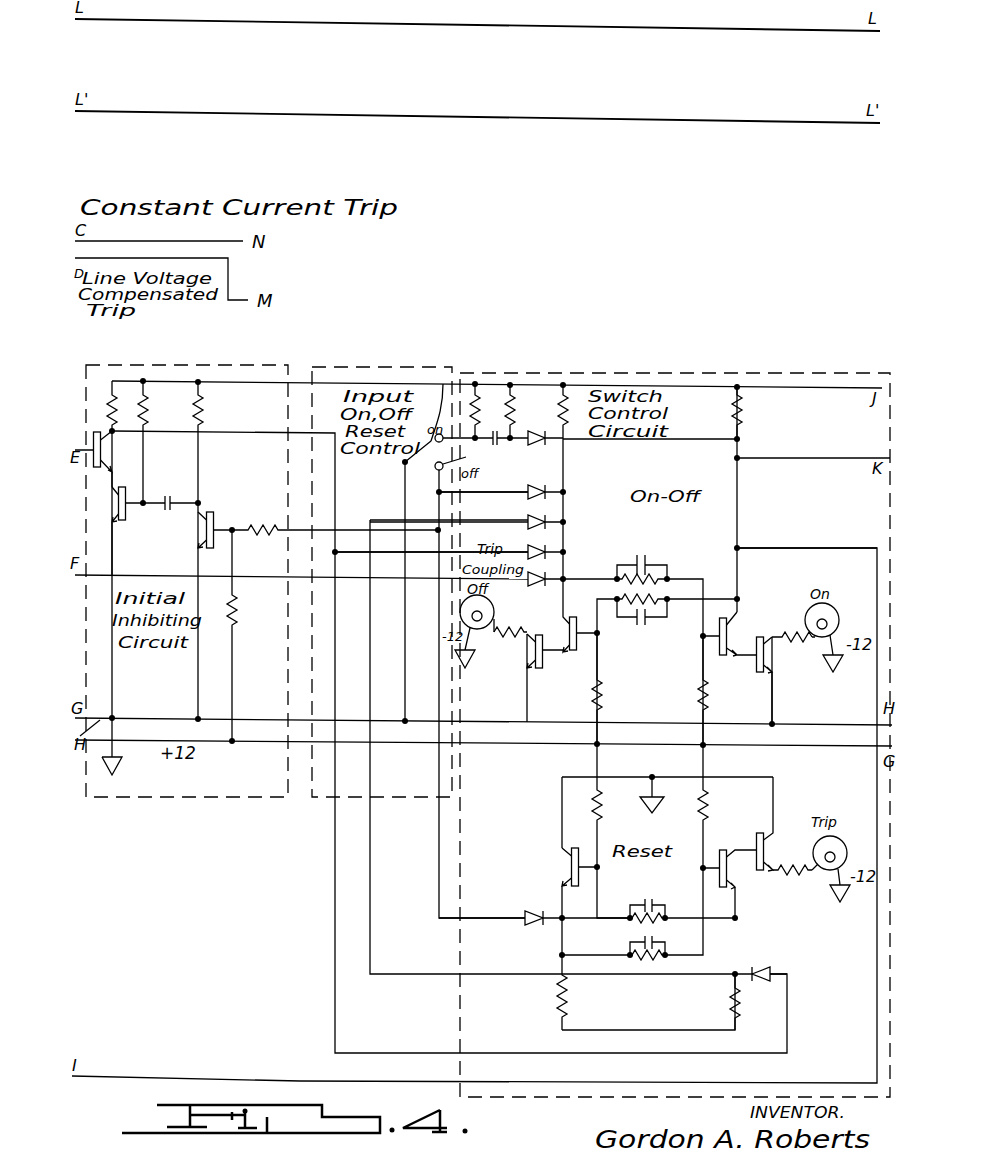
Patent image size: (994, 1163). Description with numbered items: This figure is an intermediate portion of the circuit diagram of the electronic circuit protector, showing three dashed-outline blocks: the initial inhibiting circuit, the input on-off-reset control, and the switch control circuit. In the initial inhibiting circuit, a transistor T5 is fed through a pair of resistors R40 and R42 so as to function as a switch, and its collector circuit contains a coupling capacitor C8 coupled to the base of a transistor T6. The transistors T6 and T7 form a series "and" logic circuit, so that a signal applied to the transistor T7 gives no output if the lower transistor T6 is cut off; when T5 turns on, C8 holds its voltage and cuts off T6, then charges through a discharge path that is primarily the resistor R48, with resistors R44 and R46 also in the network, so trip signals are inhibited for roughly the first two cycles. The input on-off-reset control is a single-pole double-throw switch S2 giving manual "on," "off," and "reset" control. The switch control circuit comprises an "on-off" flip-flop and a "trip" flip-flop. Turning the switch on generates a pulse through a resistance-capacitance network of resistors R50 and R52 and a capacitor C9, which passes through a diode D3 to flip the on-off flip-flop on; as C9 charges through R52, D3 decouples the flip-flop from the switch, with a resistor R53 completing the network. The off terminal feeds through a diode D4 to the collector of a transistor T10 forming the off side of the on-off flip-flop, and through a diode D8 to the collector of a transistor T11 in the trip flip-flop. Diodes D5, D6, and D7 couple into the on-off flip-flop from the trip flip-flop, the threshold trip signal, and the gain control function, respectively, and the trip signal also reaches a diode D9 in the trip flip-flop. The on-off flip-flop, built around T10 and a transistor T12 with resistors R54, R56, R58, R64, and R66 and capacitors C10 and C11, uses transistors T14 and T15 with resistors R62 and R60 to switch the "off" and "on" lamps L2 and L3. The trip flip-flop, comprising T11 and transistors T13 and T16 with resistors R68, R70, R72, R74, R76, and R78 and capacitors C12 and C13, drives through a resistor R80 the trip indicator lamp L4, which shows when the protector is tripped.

The resistor R44 is at (110, 400).
The resistor R46 is at (148, 412).
The resistor R48 is at (205, 412).
The transistor T7 is at (104, 453).
The transistor T6 is at (118, 522).
The transistor T5 is at (215, 518).
The coupling capacitor C8 is at (172, 496).
The resistor R40 is at (262, 536).
The resistor R42 is at (236, 620).
The input on-off-reset switch S2 is at (440, 406).
The resistor R50 is at (478, 400).
The capacitor C9 is at (492, 433).
The resistor R52 is at (512, 405).
The resistor R53 is at (567, 410).
The diode D3 is at (548, 445).
The diode D4 is at (548, 486).
The diode D5 is at (548, 516).
The diode D6 is at (548, 546).
The diode D7 is at (548, 573).
The resistor R58 is at (745, 422).
The capacitor C10 is at (640, 560).
The resistor R54 is at (672, 502).
The resistor R56 is at (652, 596).
The capacitor C11 is at (641, 626).
The off lamp L2 is at (478, 630).
The resistor R62 is at (510, 626).
The transistor T10 is at (542, 664).
The transistor T14 is at (543, 670).
The resistor R64 is at (603, 688).
The resistor R66 is at (708, 690).
The transistor T12 is at (730, 630).
The transistor T15 is at (762, 680).
The resistor R60 is at (800, 645).
The on lamp L3 is at (828, 602).
The resistor R70 is at (706, 812).
The resistor R68 is at (602, 815).
The transistor T11 is at (575, 847).
The diode D8 is at (535, 910).
The resistor R72 is at (635, 924).
The capacitor C12 is at (660, 893).
The transistor T13 is at (723, 848).
The transistor T16 is at (765, 872).
The trip indicator lamp L4 is at (813, 853).
The resistor R80 is at (796, 875).
The capacitor C13 is at (655, 945).
The resistor R74 is at (650, 962).
The resistor R76 is at (558, 1000).
The resistor R78 is at (733, 1000).
The diode D9 is at (760, 967).